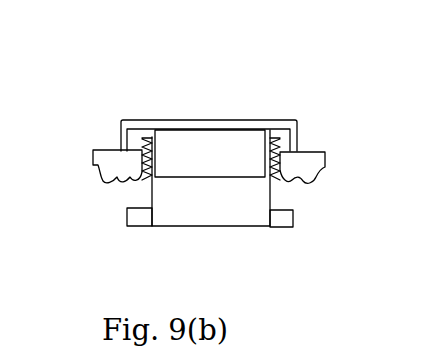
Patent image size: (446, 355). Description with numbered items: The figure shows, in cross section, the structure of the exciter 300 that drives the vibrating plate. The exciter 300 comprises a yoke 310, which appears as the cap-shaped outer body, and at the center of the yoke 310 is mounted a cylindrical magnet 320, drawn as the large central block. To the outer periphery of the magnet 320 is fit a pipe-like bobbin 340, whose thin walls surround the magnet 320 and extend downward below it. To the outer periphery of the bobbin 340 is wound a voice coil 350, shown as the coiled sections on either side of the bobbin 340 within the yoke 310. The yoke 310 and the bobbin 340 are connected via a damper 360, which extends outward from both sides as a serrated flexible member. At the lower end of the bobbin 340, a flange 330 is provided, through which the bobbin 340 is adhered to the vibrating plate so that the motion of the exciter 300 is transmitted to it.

The exciter 300 is at (270, 90).
The yoke 310 is at (121, 135).
The cylindrical magnet 320 is at (187, 140).
The flange 330 is at (138, 226).
The bobbin 340 is at (152, 190).
The voice coil 350 is at (277, 143).
The damper 360 is at (305, 181).